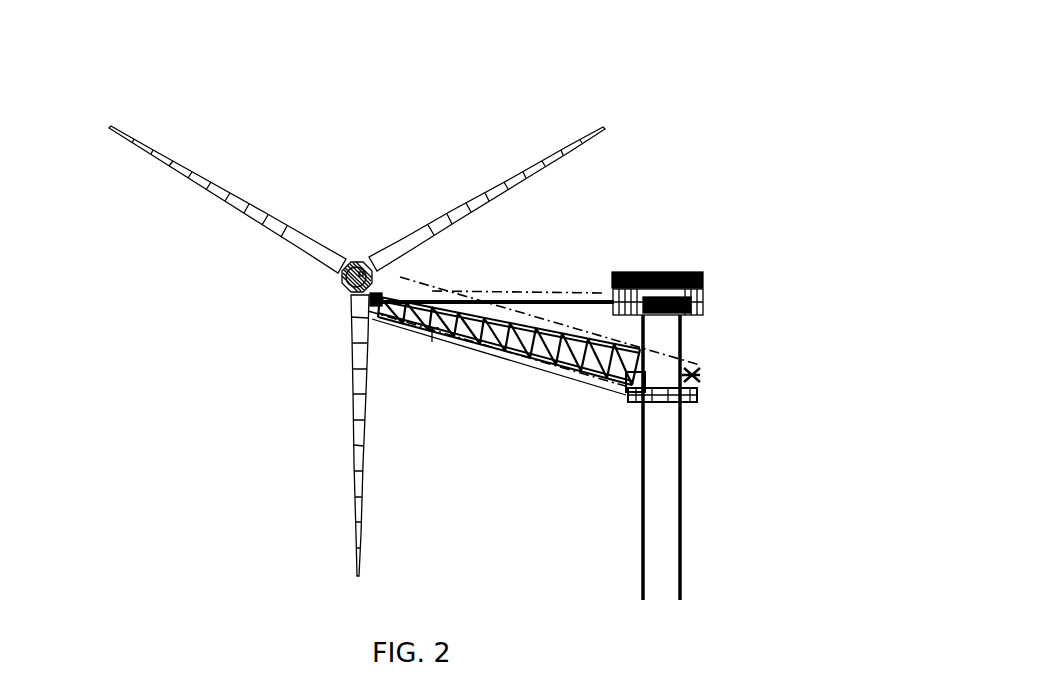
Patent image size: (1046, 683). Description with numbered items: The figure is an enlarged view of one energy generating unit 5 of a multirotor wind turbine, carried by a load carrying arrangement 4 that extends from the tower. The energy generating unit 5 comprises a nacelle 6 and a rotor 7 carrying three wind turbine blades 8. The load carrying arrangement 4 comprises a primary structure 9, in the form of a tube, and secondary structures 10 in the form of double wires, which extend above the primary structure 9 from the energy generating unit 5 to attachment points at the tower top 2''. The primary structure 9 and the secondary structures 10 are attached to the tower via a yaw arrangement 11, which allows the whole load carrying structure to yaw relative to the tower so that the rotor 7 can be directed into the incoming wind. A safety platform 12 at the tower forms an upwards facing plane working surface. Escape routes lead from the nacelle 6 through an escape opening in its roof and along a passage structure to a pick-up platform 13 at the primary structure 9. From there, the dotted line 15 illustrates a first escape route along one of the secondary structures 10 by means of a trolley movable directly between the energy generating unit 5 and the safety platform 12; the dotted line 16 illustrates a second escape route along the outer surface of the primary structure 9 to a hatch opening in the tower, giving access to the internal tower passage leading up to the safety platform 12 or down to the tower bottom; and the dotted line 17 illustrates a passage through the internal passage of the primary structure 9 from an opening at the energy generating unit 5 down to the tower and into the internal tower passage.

The tower top 2'' is at (683, 455).
The load carrying arrangement 4 is at (493, 362).
The energy generating unit 5 is at (349, 242).
The nacelle 6 is at (371, 258).
The rotor 7 is at (356, 280).
The wind turbine blade 8 is at (152, 160).
The primary structure 9 is at (537, 356).
The secondary structure 10 is at (588, 300).
The yaw arrangement 11 is at (628, 313).
The safety platform 12 is at (657, 272).
The pick-up platform 13 is at (388, 291).
The dotted line 15 is at (527, 290).
The dotted line 16 is at (665, 352).
The dotted line 17 is at (430, 347).